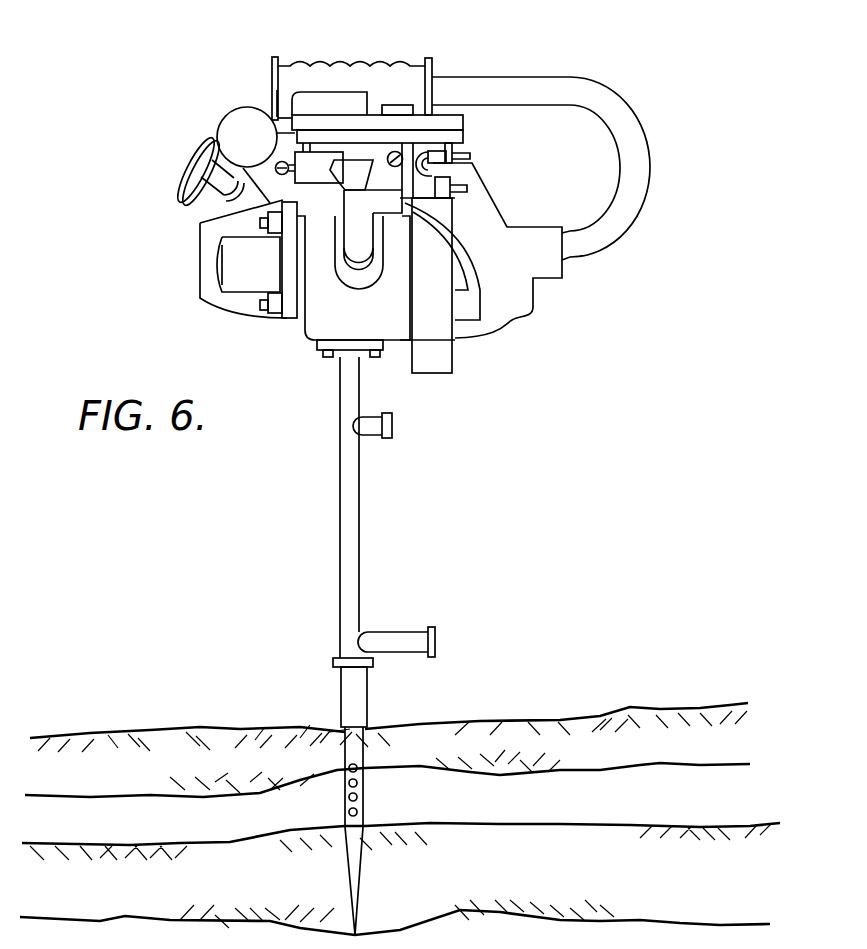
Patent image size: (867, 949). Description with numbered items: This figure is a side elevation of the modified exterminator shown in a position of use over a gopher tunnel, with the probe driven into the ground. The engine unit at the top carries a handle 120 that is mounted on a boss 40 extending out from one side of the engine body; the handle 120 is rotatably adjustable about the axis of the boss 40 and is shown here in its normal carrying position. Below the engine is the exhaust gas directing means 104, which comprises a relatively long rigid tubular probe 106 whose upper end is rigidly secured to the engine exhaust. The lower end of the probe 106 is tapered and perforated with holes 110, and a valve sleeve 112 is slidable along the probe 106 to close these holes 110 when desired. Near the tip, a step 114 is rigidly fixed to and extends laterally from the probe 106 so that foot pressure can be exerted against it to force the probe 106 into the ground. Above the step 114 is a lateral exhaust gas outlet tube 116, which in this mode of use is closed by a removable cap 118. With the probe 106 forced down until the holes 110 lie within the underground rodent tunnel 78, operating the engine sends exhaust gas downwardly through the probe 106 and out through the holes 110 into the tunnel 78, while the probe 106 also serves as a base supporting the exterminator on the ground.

The boss 40 is at (411, 189).
The underground rodent tunnel 78 is at (621, 820).
The exhaust gas directing means 104 is at (312, 504).
The tubular probe 106 is at (362, 553).
The holes 110 is at (358, 812).
The valve sleeve 112 is at (365, 694).
The step 114 is at (396, 630).
The lateral exhaust gas outlet tube 116 is at (370, 430).
The removable cap 118 is at (392, 421).
The handle 120 is at (380, 64).